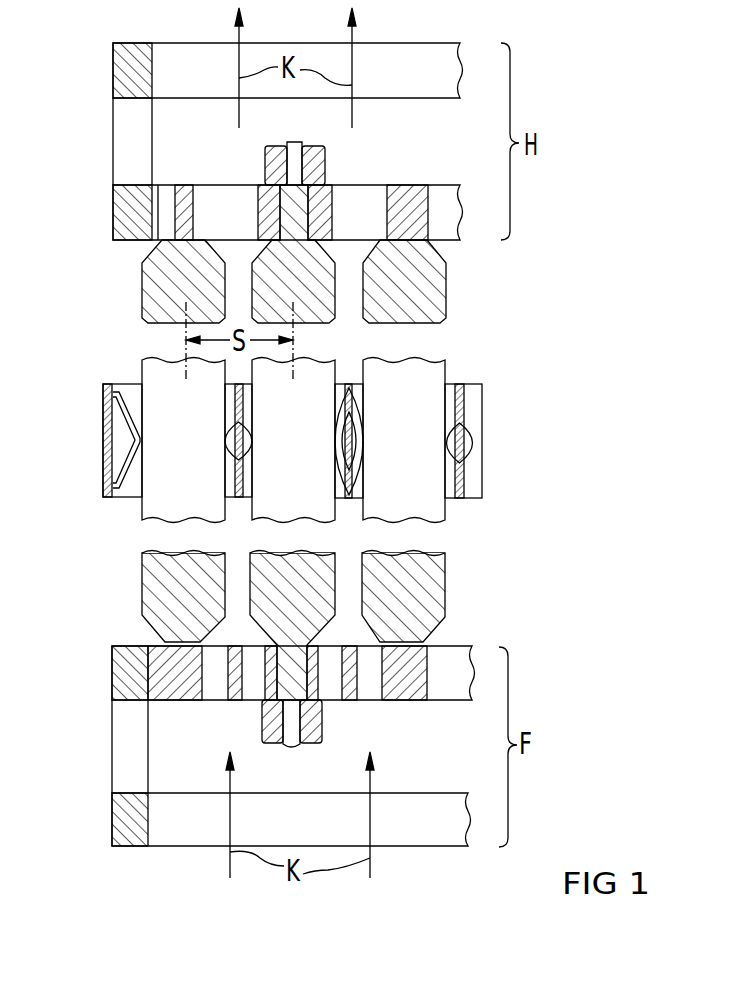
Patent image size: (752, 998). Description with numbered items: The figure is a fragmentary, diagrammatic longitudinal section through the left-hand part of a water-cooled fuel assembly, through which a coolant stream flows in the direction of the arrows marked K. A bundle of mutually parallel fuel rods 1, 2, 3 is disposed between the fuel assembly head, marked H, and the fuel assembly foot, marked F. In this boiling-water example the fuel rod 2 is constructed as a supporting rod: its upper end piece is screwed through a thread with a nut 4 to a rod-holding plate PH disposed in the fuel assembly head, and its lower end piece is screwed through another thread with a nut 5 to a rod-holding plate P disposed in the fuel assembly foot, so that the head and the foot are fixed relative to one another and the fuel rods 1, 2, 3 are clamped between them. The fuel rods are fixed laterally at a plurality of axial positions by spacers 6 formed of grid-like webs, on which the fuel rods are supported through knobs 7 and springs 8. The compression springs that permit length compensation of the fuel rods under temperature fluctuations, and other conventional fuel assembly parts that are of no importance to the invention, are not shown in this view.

The fuel rod 1 is at (160, 300).
The fuel rod 2 is at (307, 312).
The fuel rod 3 is at (432, 295).
The nut 4 is at (265, 165).
The nut 5 is at (264, 722).
The spacer 6 is at (103, 440).
The knob 7 is at (247, 442).
The spring 8 is at (363, 443).
The rod-holding plate PH is at (404, 192).
The rod-holding plate P is at (397, 687).